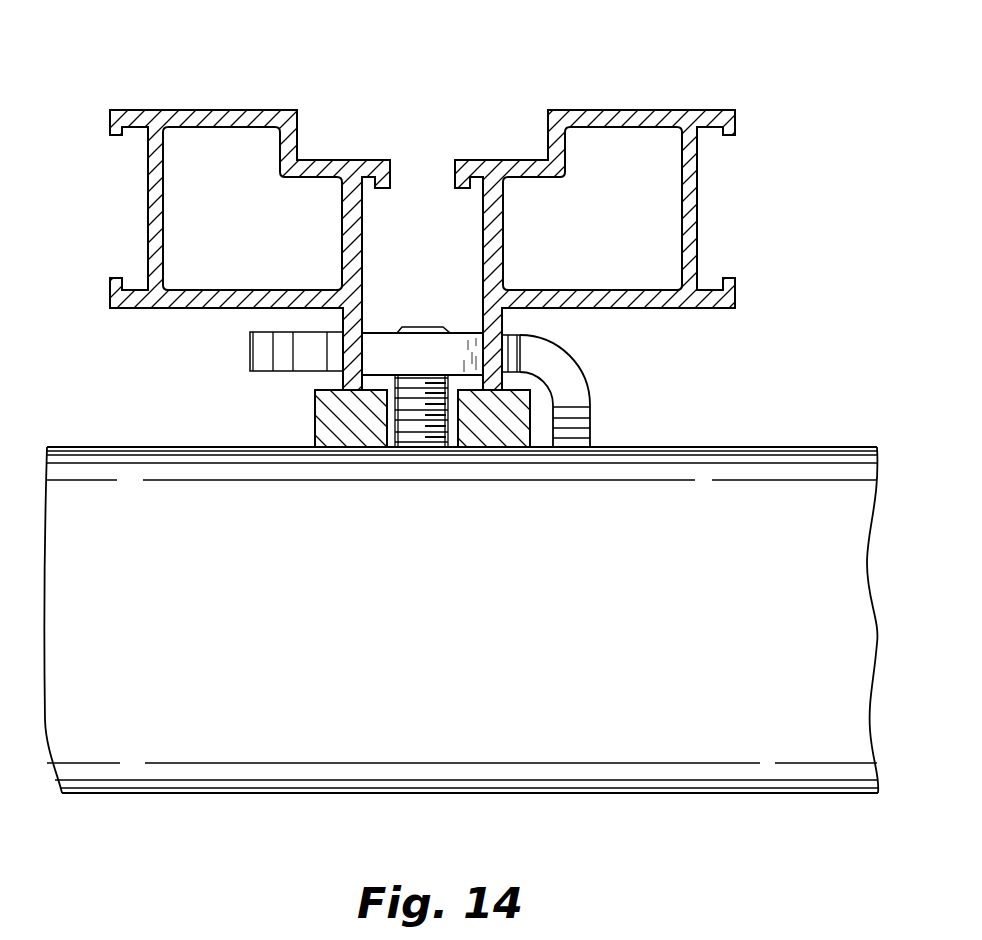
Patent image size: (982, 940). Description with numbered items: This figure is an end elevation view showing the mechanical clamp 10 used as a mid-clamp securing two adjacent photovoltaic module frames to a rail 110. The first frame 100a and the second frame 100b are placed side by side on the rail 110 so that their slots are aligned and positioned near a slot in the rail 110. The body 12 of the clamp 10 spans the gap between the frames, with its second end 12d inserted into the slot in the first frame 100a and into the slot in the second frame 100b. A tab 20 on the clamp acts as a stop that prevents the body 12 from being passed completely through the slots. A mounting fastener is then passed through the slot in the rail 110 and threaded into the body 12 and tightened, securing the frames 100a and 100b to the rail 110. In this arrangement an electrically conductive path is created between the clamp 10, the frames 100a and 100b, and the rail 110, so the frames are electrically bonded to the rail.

The clamp 10 is at (296, 390).
The body 12 is at (390, 325).
The second end 12d is at (246, 352).
The tab 20 is at (597, 395).
The first frame 100a is at (671, 97).
The second frame 100b is at (162, 98).
The rail 110 is at (800, 440).